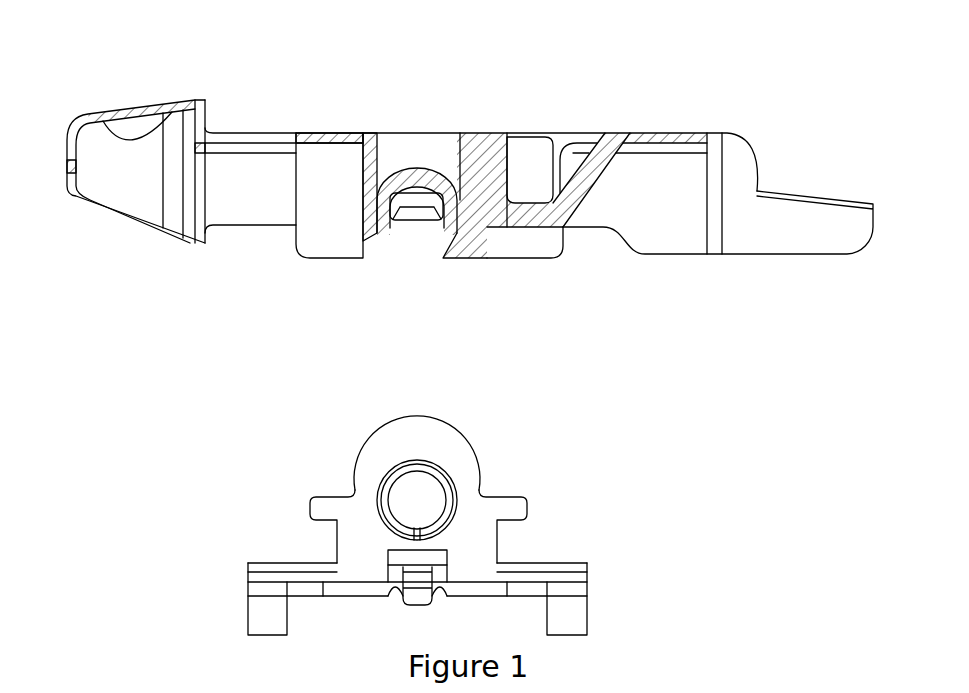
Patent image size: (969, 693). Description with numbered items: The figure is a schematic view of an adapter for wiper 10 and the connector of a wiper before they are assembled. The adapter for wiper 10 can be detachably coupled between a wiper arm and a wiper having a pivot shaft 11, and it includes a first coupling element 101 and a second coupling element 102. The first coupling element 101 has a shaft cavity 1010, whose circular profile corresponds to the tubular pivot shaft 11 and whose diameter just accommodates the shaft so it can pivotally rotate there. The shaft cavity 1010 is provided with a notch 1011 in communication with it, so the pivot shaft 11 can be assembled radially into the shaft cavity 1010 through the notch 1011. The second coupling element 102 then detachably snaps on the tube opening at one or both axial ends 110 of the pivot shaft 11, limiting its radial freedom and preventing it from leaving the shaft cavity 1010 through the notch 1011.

The adapter for wiper 10 is at (716, 105).
The first coupling element 101 is at (466, 247).
The shaft cavity 1010 is at (417, 230).
The notch 1011 is at (371, 271).
The second coupling element 102 is at (415, 197).
The pivot shaft 11 is at (432, 465).
The axial ends 110 is at (407, 462).